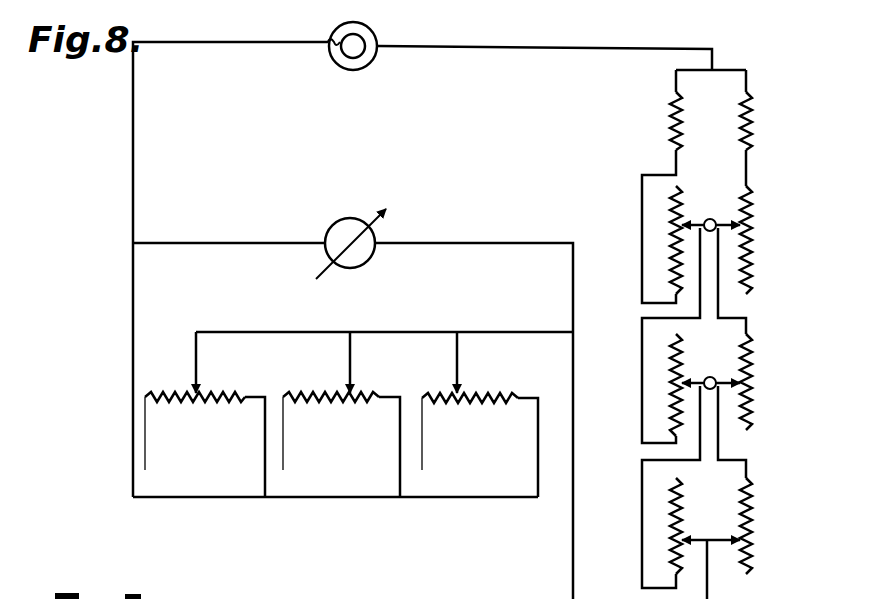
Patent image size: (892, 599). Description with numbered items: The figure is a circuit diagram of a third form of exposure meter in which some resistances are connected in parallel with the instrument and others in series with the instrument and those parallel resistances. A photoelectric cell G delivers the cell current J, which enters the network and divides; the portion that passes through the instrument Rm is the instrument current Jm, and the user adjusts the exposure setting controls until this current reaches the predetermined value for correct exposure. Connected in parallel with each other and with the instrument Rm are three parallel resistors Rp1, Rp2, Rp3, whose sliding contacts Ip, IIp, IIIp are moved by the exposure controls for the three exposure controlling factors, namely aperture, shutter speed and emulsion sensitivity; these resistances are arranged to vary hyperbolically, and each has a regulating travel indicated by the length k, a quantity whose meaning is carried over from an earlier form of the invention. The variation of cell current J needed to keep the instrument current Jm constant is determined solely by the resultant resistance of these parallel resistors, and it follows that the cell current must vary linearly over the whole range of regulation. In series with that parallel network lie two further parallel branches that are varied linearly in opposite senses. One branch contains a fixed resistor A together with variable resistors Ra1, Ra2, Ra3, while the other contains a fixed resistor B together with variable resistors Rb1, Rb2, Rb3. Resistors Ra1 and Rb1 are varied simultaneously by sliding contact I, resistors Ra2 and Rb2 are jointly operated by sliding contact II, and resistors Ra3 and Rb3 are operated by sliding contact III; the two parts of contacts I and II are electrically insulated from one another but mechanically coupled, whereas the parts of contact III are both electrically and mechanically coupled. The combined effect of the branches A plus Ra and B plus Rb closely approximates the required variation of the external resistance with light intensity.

The cell G is at (368, 37).
The cell current J is at (133, 120).
The instrument current Jm is at (192, 243).
The instrument Rm is at (333, 234).
The sliding contact of first parallel resistor Ip is at (196, 388).
The sliding contact of second parallel resistor IIp is at (350, 388).
The sliding contact of third parallel resistor IIIp is at (467, 380).
The first parallel resistor Rp1 is at (214, 399).
The second parallel resistor Rp2 is at (352, 399).
The third parallel resistor Rp3 is at (488, 399).
The resistance range constant k is at (262, 461).
The fixed resistor B is at (672, 146).
The fixed resistor A is at (749, 147).
The sliding contact I is at (710, 219).
The sliding contact II is at (710, 377).
The sliding contact III is at (707, 540).
The variable resistor Rb1 is at (671, 256).
The variable resistor Ra1 is at (751, 239).
The variable resistor Rb2 is at (671, 402).
The variable resistor Ra2 is at (750, 393).
The variable resistor Rb3 is at (671, 553).
The variable resistor Ra3 is at (745, 521).